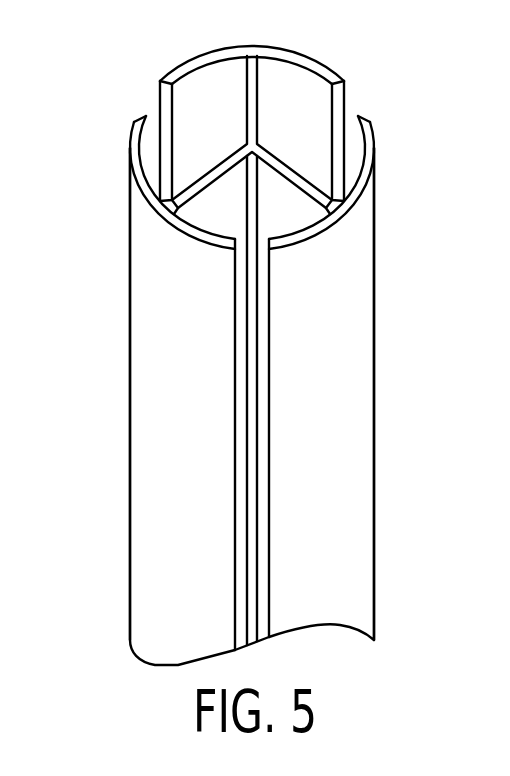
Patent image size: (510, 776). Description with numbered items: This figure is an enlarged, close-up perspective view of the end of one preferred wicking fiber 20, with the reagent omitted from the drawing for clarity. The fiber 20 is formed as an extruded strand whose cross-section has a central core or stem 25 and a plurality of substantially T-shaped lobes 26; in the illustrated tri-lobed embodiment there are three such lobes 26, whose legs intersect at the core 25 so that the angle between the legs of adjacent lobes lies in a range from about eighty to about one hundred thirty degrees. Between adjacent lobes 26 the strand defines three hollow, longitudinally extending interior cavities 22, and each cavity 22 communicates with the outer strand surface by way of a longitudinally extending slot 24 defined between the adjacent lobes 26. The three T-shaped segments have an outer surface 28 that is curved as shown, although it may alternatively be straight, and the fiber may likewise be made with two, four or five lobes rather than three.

The wicking fiber 20 is at (80, 435).
The interior cavity 22 is at (217, 80).
The longitudinally extending slot 24 is at (152, 104).
The central core 25 is at (254, 328).
The T-shaped lobe 26 is at (352, 250).
The outer surface 28 is at (155, 488).